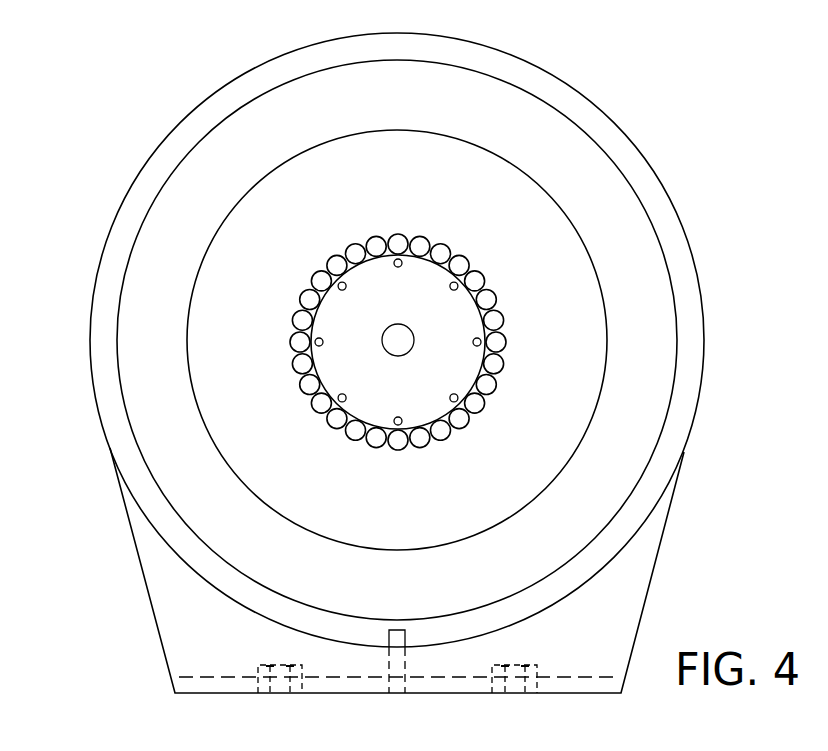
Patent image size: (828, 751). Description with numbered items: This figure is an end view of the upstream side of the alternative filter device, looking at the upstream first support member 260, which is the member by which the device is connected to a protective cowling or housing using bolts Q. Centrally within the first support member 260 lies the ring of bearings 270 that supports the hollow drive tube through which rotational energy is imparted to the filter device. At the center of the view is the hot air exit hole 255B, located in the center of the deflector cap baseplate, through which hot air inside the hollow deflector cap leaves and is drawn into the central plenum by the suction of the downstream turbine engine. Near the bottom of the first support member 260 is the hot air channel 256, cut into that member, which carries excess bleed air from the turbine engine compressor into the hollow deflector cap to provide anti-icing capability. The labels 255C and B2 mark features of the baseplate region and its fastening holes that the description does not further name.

The first support member 260 is at (100, 332).
The bearings 270 is at (462, 255).
The disc / hub plate 255C is at (483, 325).
The bolt holes B2 is at (399, 267).
The hot air exit hole 255B is at (391, 352).
The hot air channel 256 is at (412, 638).
The bolts Q is at (277, 688).